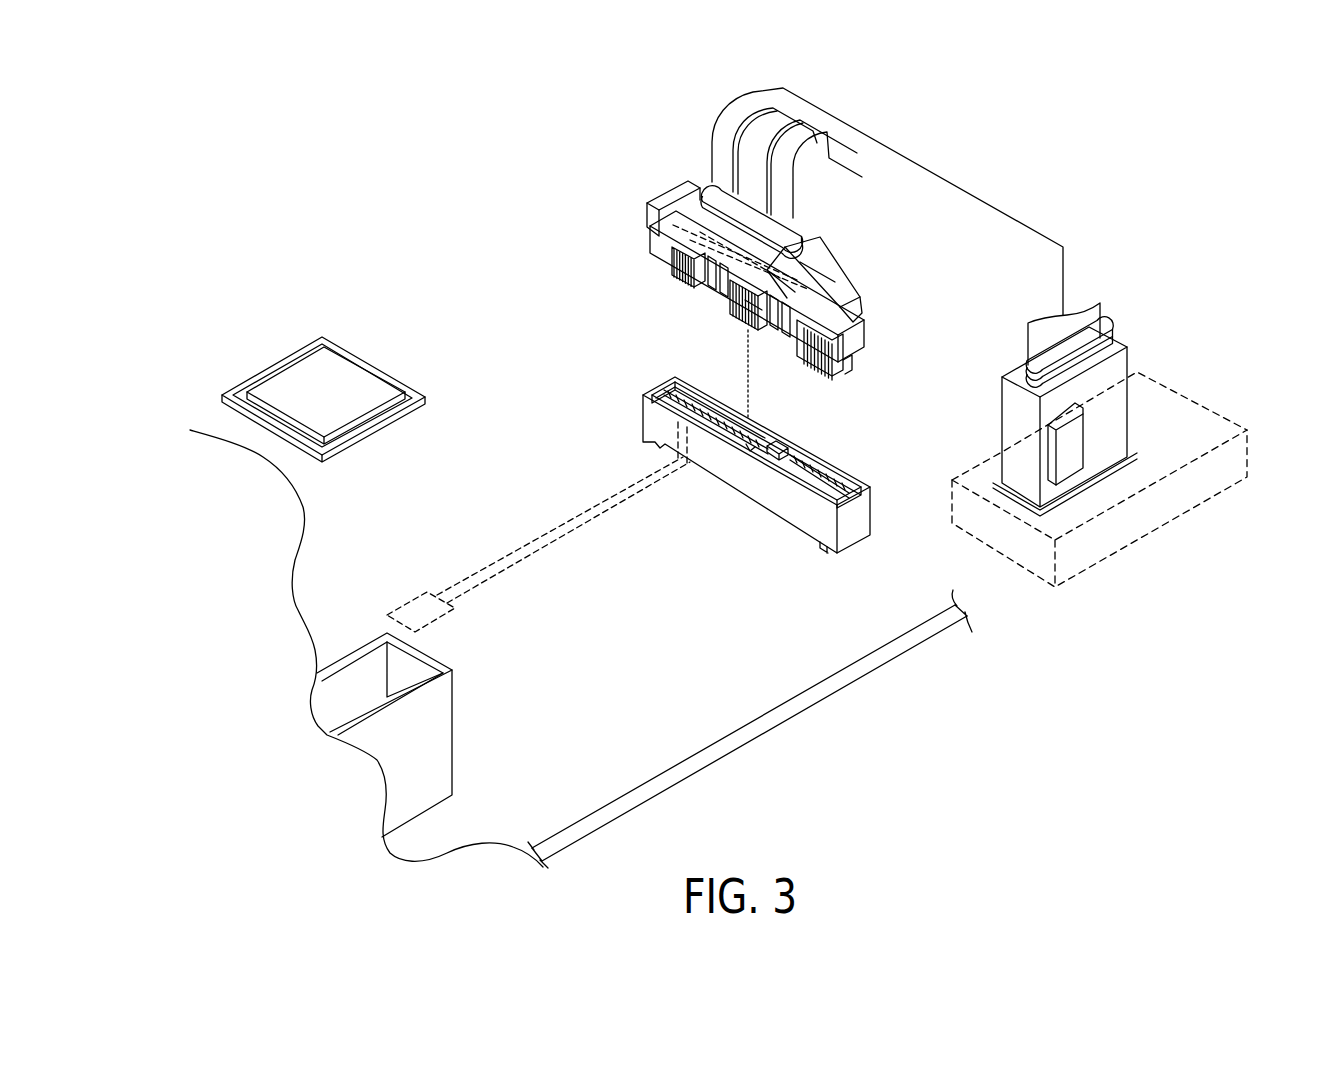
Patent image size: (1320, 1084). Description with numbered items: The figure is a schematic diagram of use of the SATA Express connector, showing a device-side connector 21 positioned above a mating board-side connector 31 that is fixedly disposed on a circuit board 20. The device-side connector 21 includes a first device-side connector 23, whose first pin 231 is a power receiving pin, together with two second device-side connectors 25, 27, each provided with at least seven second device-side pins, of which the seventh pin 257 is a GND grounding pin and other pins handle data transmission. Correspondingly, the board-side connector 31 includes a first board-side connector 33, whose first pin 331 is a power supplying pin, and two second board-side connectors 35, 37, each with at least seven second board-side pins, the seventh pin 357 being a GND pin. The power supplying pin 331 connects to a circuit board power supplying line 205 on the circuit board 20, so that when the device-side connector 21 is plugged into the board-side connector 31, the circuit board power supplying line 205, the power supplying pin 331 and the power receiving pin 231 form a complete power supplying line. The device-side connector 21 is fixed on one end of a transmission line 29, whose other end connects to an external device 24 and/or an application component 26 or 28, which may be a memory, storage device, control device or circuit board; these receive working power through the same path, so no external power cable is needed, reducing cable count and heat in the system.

The circuit board 20 is at (715, 722).
The circuit board power supplying line 205 is at (420, 597).
The device-side connector 21 is at (762, 260).
The first device-side connector 23 is at (672, 206).
The first pin 231 is at (672, 268).
The second device-side connector 25 is at (810, 262).
The seventh pin 257 is at (748, 313).
The second device-side connector 27 is at (848, 290).
The transmission line 29 is at (740, 108).
The board-side connector 31 is at (753, 444).
The first board-side connector 33 is at (673, 395).
The first pin 331 is at (650, 408).
The second board-side connector 35 is at (760, 438).
The seventh pin 357 is at (748, 458).
The second board-side connector 37 is at (826, 462).
The external device 24 is at (1106, 416).
The application component 26 is at (1078, 428).
The application component 28 is at (1140, 520).